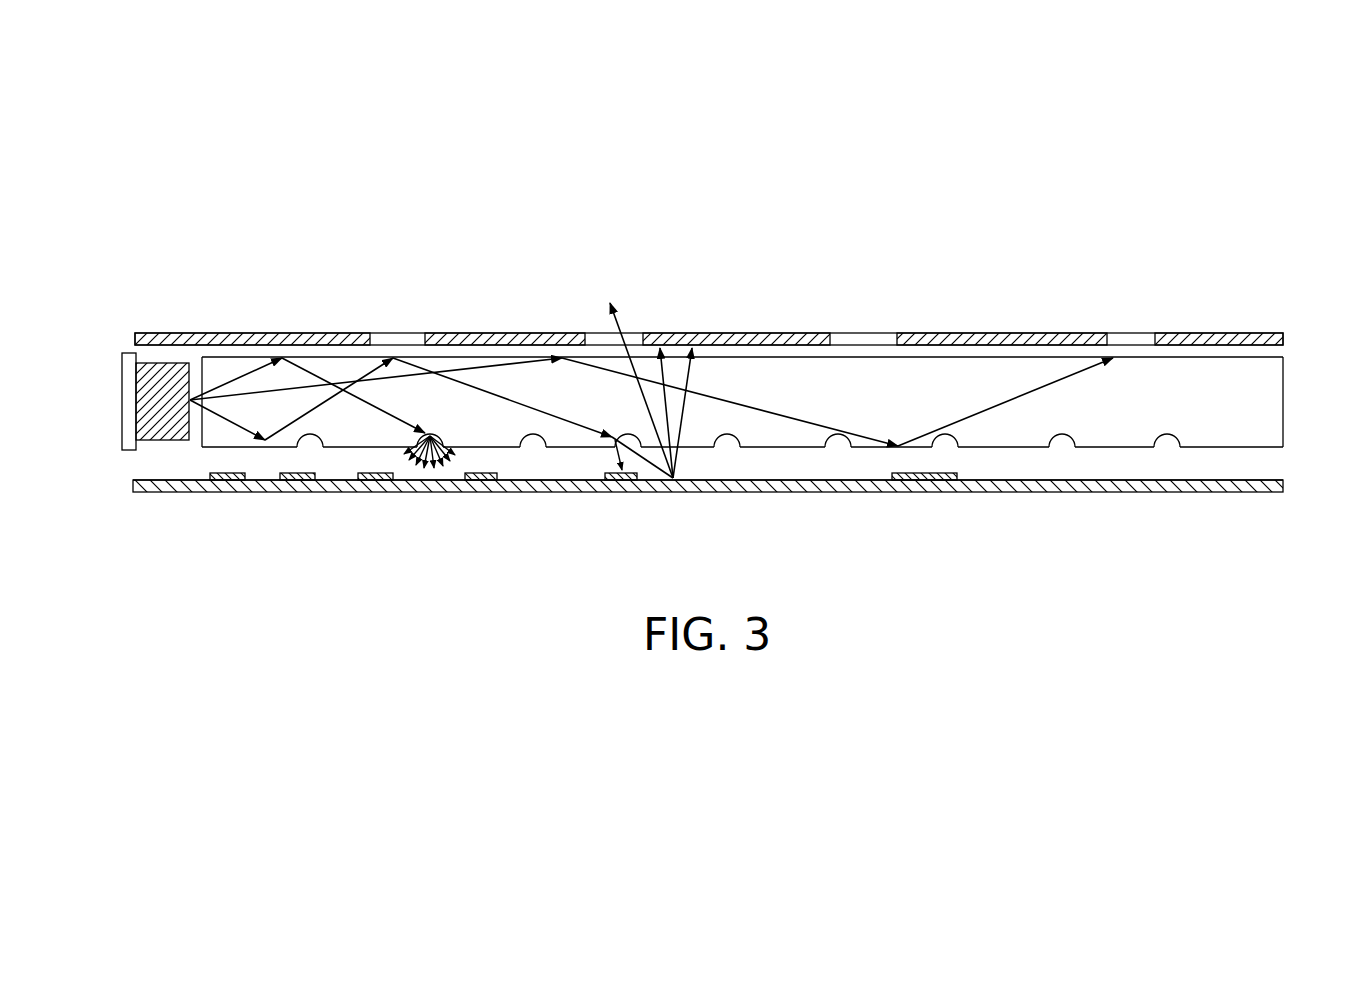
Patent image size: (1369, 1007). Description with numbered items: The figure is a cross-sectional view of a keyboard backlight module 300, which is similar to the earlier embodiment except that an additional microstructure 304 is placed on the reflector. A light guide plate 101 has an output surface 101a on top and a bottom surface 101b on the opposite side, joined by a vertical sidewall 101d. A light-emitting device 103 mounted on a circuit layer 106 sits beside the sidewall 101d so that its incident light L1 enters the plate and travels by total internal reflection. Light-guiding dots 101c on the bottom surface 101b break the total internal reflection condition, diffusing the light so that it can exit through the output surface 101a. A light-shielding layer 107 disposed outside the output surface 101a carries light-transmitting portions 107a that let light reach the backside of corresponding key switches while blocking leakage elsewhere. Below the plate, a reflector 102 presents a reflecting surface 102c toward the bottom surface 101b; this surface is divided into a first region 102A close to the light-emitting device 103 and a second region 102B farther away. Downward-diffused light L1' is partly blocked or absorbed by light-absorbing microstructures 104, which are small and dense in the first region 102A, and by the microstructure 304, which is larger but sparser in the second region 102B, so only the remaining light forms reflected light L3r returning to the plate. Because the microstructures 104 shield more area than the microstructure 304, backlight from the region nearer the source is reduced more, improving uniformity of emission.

The keyboard backlight module 300 is at (98, 113).
The first region 102A is at (698, 193).
The second region 102B is at (1285, 212).
The light-emitting device 103 is at (166, 375).
The incident light L1 is at (651, 383).
The circuit layer 106 is at (130, 397).
The sidewall 101d is at (199, 438).
The microstructure 104 is at (298, 492).
The incident light diffused downward L1' is at (535, 494).
The reflected light L3r is at (680, 452).
The microstructure 304 is at (925, 492).
The reflecting surface 102c is at (1095, 478).
The reflector 102 is at (708, 506).
The bottom surface 101b is at (777, 404).
The light guide plate 101 is at (697, 404).
The light-shielding layer 107 is at (752, 307).
The output surface 101a is at (1221, 355).
The light-transmitting portion 107a is at (1126, 340).
The light-guiding dot 101c is at (728, 431).